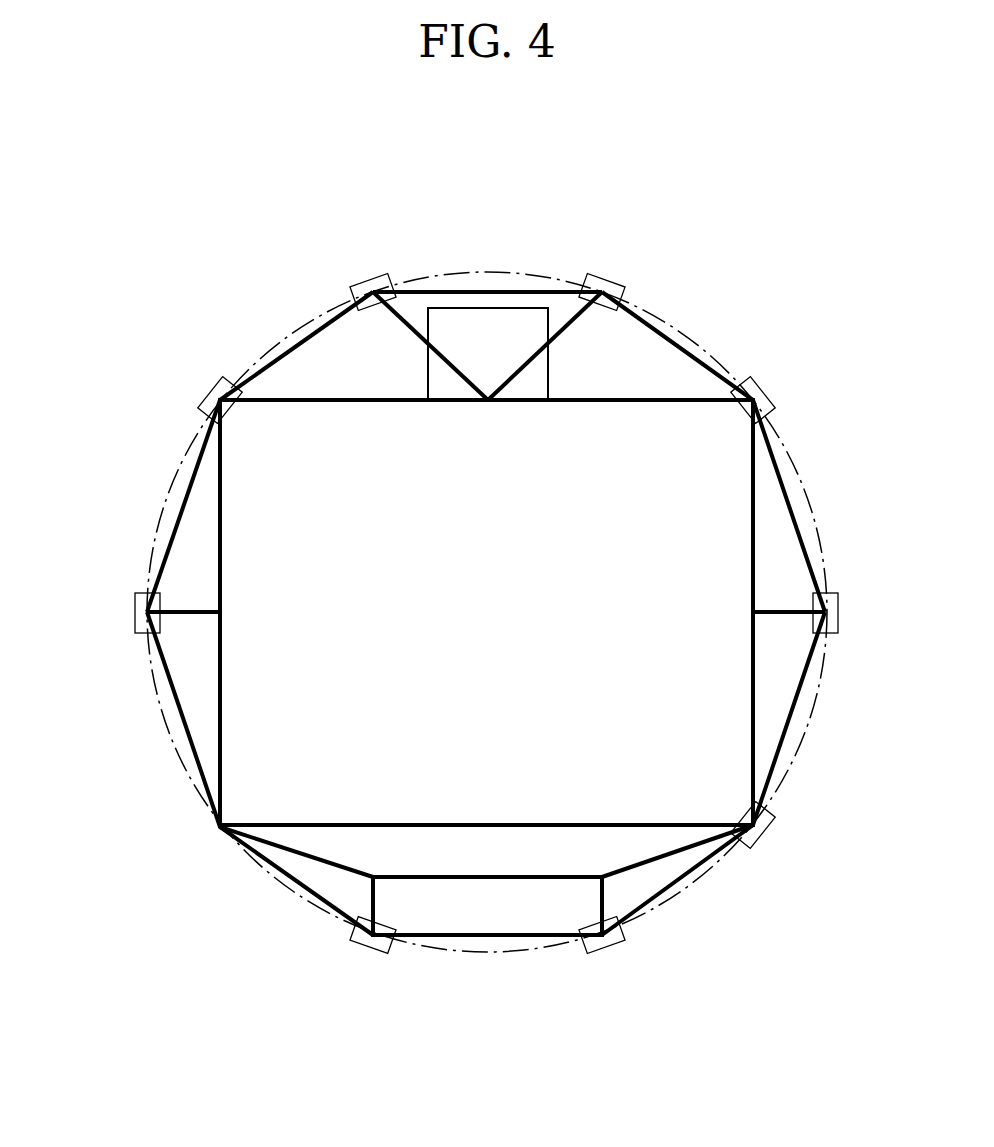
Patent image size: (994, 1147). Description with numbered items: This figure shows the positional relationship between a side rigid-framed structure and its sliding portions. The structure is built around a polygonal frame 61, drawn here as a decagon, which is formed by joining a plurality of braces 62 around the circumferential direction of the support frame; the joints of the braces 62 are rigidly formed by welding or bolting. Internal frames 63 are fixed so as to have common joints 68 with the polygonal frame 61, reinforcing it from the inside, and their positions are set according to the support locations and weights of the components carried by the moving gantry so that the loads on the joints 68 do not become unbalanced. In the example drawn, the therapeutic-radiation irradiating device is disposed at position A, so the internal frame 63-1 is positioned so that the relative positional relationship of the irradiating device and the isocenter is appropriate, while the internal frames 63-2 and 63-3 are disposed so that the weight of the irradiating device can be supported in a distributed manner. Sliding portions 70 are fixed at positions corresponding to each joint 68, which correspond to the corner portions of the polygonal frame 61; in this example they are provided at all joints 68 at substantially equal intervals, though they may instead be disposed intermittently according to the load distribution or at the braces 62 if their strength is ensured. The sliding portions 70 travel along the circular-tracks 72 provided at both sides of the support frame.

The polygonal frame 61 is at (290, 344).
The braces 62 is at (800, 520).
The internal frames 63 is at (777, 612).
The internal frame 63-1 is at (558, 405).
The internal frame 63-2 is at (415, 330).
The internal frame 63-3 is at (565, 326).
The joints 68 is at (756, 400).
The sliding portions 70 is at (214, 394).
The circular-tracks 72 is at (505, 268).
The position A is at (461, 322).